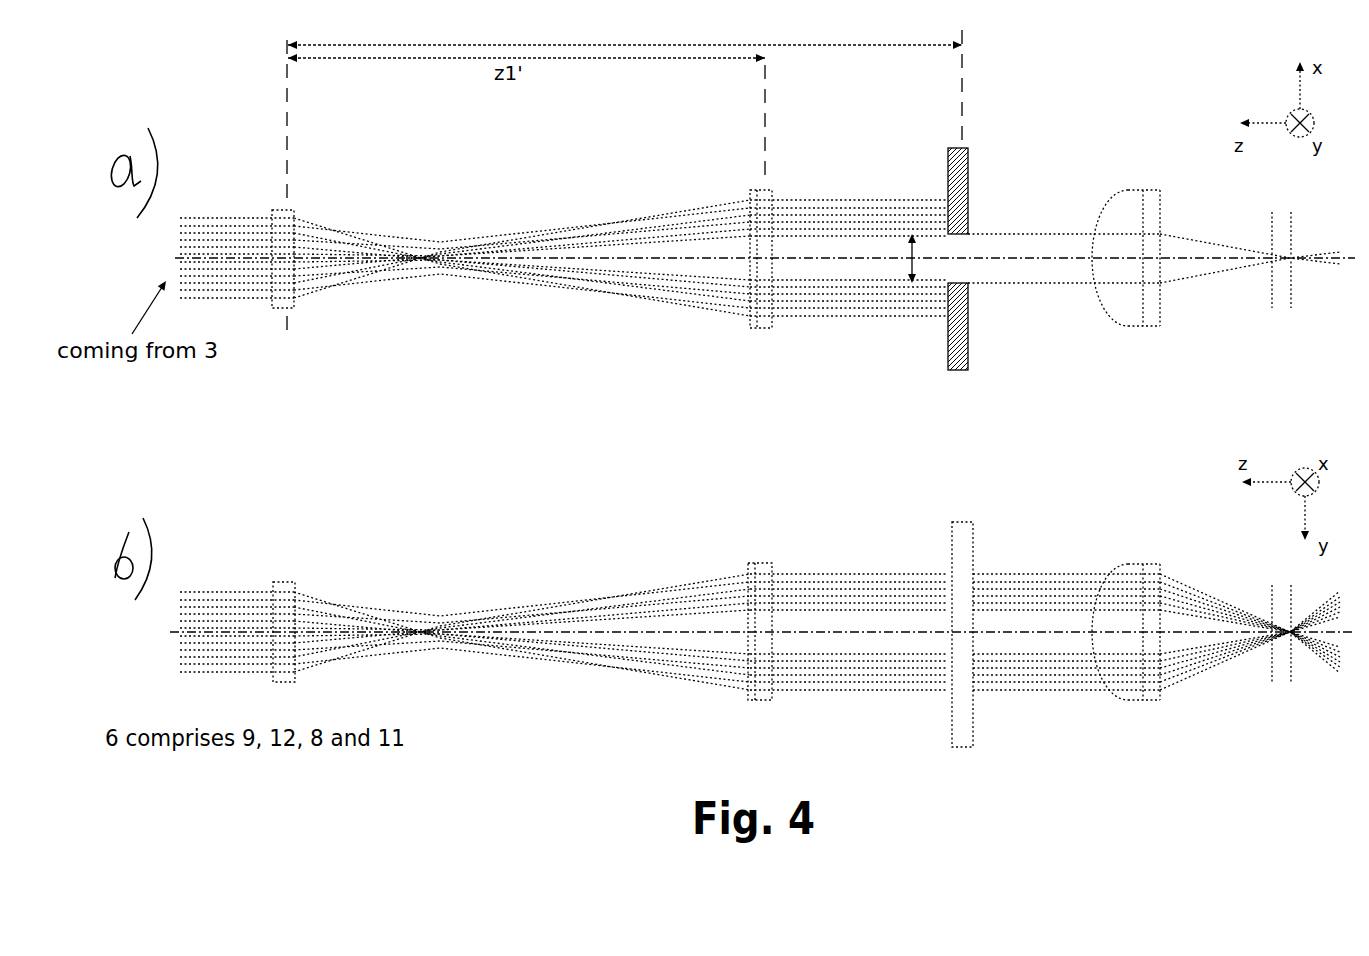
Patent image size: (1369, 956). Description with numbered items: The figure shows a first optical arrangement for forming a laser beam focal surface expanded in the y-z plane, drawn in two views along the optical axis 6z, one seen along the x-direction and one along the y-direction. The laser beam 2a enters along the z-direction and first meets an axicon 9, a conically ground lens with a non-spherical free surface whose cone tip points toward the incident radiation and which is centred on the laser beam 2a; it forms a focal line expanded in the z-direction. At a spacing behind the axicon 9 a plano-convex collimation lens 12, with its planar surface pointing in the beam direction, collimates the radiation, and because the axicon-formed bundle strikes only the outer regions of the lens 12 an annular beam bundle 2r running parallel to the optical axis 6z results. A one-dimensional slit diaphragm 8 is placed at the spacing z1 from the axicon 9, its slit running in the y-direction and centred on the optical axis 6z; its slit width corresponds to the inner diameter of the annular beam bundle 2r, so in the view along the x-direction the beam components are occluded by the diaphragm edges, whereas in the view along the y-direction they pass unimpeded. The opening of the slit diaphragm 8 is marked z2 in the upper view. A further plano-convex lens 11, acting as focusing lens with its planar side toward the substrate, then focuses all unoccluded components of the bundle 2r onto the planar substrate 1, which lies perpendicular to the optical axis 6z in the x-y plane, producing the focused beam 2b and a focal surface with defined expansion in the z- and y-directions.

The planar substrate 1 is at (1273, 312).
The laser beam 2a is at (216, 240).
The annular beam bundle 2r is at (830, 303).
The focused beam 2b is at (1274, 624).
The optical axis 6z is at (1012, 248).
The slit diaphragm 8 is at (936, 364).
The axicon 9 is at (290, 578).
The plano-convex collimation lens serving as focusing lens 11 is at (1131, 316).
The plano-convex collimation lens 12 is at (758, 325).
The spacing of the slit diaphragm z1 is at (625, 35).
The aperture opening width z2 is at (925, 258).